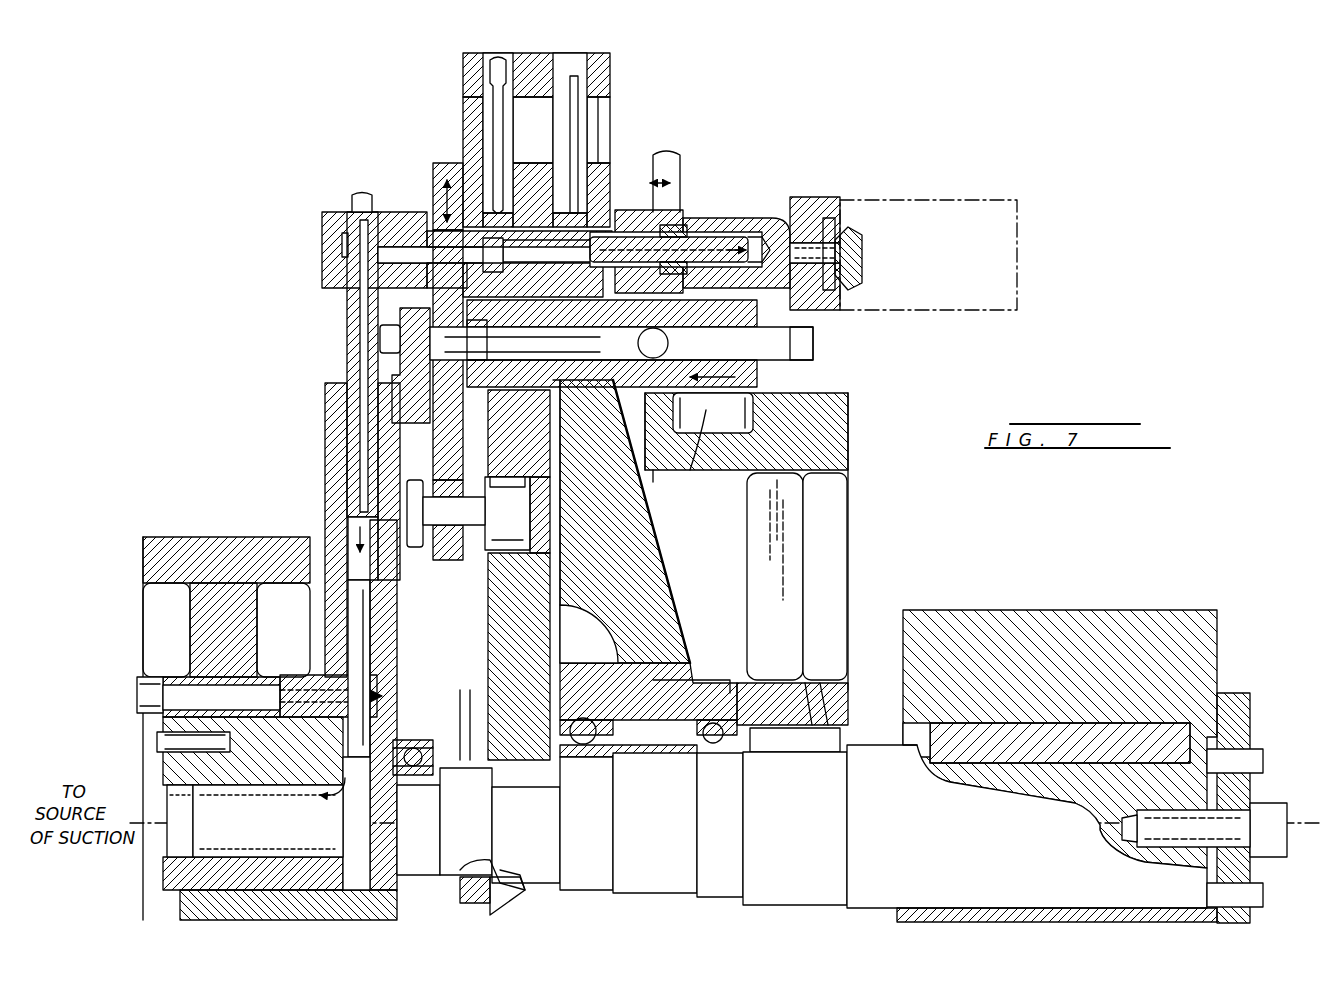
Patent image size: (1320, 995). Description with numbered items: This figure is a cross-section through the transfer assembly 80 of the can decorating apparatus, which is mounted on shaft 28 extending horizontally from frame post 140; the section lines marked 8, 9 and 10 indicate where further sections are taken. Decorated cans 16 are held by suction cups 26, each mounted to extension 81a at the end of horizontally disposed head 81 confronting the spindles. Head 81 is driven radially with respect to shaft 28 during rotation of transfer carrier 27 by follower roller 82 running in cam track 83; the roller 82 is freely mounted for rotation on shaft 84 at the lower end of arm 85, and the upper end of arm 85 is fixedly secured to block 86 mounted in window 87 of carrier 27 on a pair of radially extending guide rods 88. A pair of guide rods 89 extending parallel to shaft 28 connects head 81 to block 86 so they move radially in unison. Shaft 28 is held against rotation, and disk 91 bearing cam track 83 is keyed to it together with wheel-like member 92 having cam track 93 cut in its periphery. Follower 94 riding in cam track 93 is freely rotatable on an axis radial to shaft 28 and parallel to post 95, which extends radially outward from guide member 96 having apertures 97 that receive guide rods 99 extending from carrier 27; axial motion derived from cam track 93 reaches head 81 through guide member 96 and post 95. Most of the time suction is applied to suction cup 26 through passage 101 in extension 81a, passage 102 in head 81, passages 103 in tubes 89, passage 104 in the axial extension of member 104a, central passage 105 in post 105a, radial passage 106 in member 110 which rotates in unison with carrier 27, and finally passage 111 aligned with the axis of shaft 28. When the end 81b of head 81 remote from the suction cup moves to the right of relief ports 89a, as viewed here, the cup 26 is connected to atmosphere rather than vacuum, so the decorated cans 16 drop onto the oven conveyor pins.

The section line 8- 8 is at (483, 48).
The section line 9- 9 is at (657, 178).
The section line 10- 10 is at (862, 178).
The can 16 is at (964, 200).
The suction cup 26 is at (864, 250).
The transfer wheel 27 is at (670, 584).
The shaft 28 is at (805, 822).
The transfer assembly 80 is at (316, 196).
The head 81 is at (742, 240).
The extension 81a is at (830, 197).
The end of head 81b is at (626, 210).
The follower roller 82 is at (520, 533).
The cam track 83 is at (497, 482).
The shaft 84 is at (466, 515).
The arm 85 is at (446, 442).
The block 86 is at (470, 170).
The window 87 is at (612, 118).
The guide rods 88 is at (483, 118).
The guide rods 89 is at (722, 245).
The relief ports 89a is at (690, 226).
The disk 91 is at (484, 660).
The wheel-like member 92 is at (845, 550).
The cam track 93 is at (745, 460).
The follower 94 is at (690, 472).
The post 95 is at (678, 152).
The guide member 96 is at (758, 372).
The apertures 97 is at (760, 353).
The guide rods 99 is at (813, 347).
The passage 101 is at (823, 228).
The passage 102 is at (762, 306).
The passages 103 is at (712, 238).
The passage 104 is at (406, 258).
The member 104a is at (322, 258).
The central passage 105 is at (350, 472).
The post 105a is at (340, 492).
The radial passage 106 is at (360, 648).
The member 110 is at (398, 664).
The passage 111 is at (245, 846).
The frame post 140 is at (1104, 612).